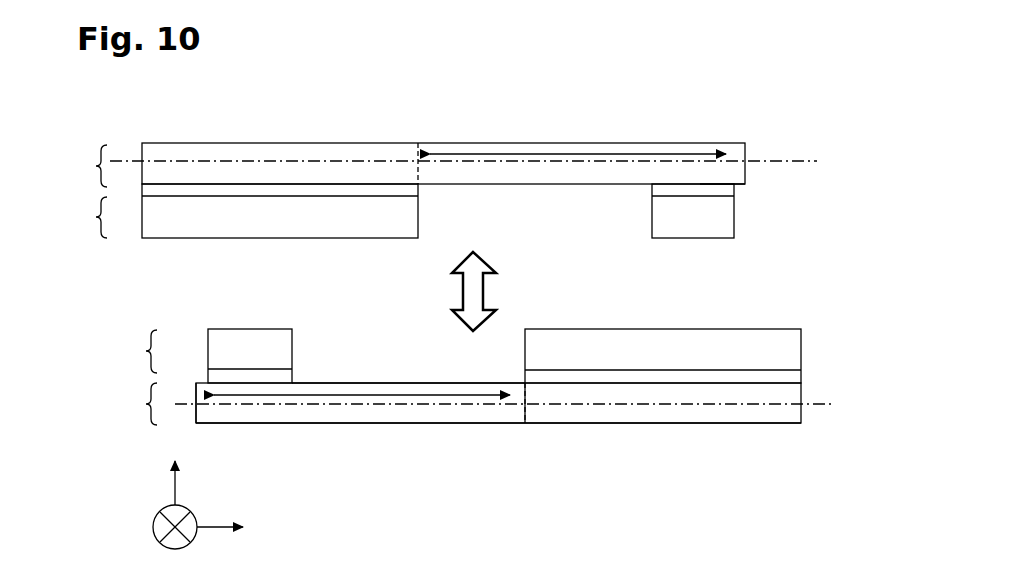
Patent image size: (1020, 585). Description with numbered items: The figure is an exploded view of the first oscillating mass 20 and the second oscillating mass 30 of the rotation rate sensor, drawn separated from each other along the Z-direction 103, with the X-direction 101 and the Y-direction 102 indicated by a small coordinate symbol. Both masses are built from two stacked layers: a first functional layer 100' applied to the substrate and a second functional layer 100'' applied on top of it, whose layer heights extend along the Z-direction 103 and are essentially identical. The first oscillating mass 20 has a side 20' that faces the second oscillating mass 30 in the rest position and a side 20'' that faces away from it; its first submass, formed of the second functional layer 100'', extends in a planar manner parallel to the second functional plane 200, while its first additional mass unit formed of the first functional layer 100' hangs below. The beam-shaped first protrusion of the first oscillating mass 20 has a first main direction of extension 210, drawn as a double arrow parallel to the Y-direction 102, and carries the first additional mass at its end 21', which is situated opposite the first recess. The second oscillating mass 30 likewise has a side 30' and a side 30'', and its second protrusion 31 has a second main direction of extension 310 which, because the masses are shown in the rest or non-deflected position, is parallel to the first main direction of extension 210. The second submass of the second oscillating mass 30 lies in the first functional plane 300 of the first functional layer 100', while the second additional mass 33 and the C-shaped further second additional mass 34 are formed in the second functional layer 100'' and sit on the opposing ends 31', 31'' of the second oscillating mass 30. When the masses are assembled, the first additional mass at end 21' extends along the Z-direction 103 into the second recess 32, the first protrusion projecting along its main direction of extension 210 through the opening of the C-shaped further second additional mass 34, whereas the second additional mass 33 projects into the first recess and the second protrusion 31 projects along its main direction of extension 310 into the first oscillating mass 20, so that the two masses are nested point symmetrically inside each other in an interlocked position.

The first oscillating mass 20 is at (488, 171).
The side of first oscillating mass facing second oscillating mass 20' is at (438, 245).
The side of first oscillating mass facing away 20'' is at (443, 128).
The first main direction of extension 210 is at (622, 150).
The second functional plane 200 is at (798, 160).
The end of first protrusion 21' is at (767, 194).
The second oscillating mass 30 is at (498, 404).
The side of second oscillating mass 30' is at (408, 333).
The side of second oscillating mass 30'' is at (360, 469).
The second protrusion 31 is at (498, 432).
The first end of second oscillating mass 31' is at (229, 432).
The second end of second oscillating mass 31'' is at (541, 432).
The second main direction of extension 310 is at (460, 411).
The first functional plane 300 is at (818, 403).
The second recess 32 is at (693, 436).
The second additional mass 33 is at (265, 340).
The further second additional mass 34 is at (627, 342).
The first functional layer 100' is at (96, 311).
The second functional layer 100'' is at (95, 259).
The X-direction 101 is at (158, 533).
The Y-direction 102 is at (238, 546).
The Z-direction 103 is at (146, 474).